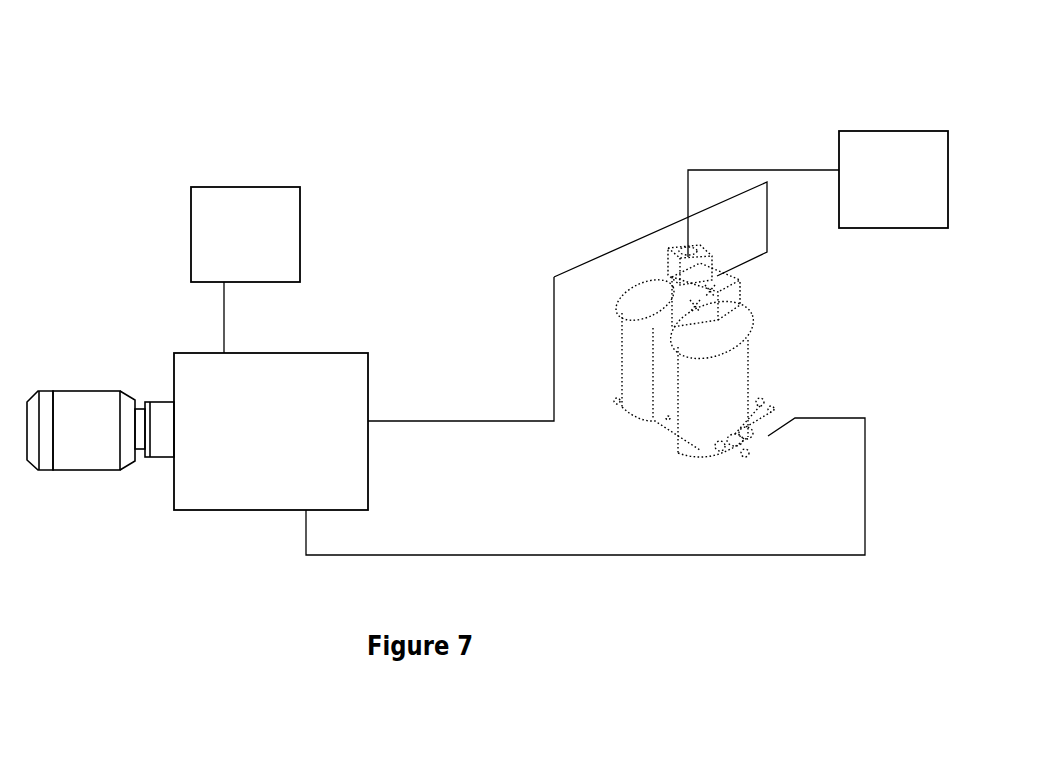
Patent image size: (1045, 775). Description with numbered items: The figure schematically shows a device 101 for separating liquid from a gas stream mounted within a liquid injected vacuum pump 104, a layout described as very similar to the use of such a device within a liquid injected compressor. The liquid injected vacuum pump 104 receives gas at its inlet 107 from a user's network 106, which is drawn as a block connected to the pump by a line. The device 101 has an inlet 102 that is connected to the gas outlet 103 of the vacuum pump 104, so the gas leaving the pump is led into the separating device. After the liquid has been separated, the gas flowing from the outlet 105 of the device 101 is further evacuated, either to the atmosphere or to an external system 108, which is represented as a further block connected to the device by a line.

The device 101 is at (694, 279).
The inlet 102 is at (716, 276).
The gas outlet 103 is at (368, 420).
The liquid injected vacuum pump 104 is at (337, 351).
The outlet 105 is at (640, 277).
The user's network 106 is at (251, 232).
The inlet 107 is at (223, 327).
The external system 108 is at (904, 165).